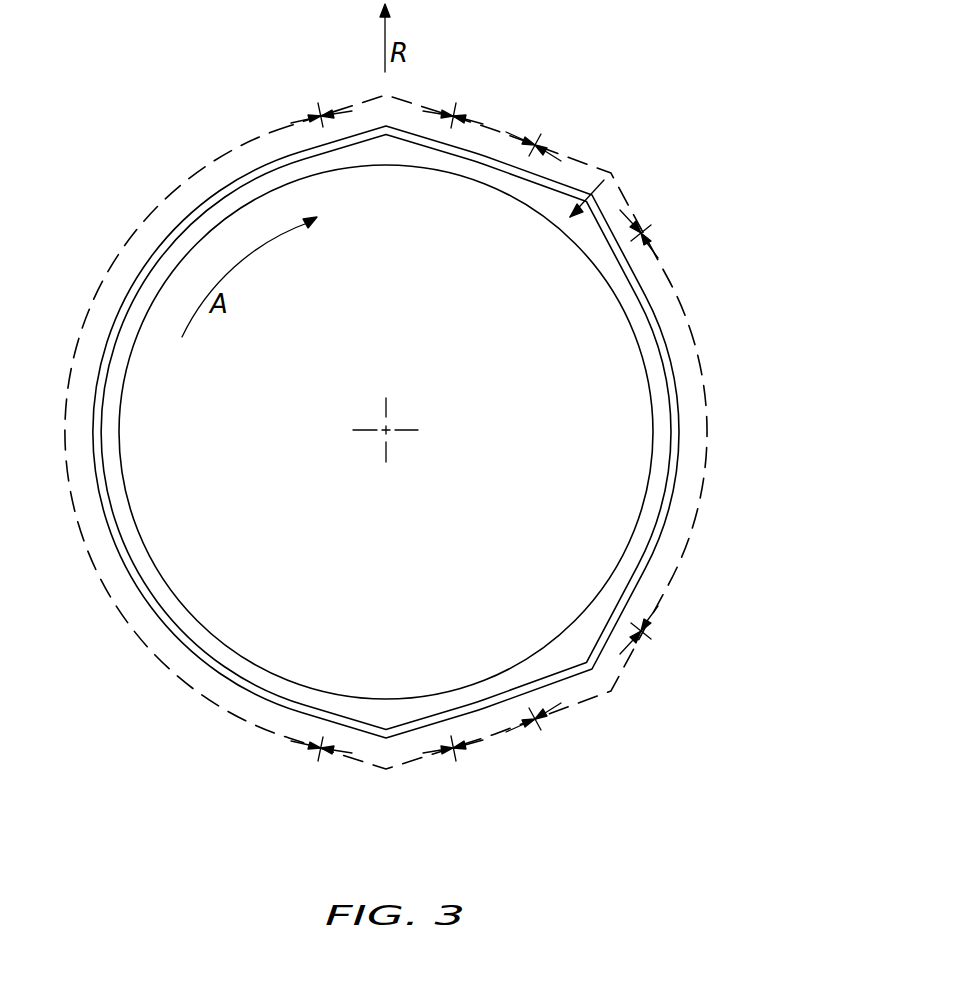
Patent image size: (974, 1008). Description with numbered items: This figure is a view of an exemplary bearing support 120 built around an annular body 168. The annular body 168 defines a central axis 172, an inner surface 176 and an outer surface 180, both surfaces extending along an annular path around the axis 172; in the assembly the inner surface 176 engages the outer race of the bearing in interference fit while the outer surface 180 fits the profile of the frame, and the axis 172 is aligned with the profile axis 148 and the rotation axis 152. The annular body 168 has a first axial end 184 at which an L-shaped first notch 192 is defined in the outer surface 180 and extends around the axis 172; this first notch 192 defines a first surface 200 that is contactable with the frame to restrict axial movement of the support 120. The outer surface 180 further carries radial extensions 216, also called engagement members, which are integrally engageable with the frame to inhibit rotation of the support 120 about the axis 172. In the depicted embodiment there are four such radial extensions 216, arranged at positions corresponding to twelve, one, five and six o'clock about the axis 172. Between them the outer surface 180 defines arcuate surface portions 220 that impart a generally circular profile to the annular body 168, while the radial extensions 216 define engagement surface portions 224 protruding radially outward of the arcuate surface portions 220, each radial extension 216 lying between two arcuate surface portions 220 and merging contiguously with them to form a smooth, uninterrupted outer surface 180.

The support 120 is at (928, 142).
The profile axis 148 is at (324, 449).
The rotation axis 152 is at (324, 449).
The axis 172 is at (384, 433).
The annular body 168 is at (660, 398).
The inner surface 176 is at (595, 246).
The outer surface 180 is at (665, 328).
The first axial end 184 is at (604, 180).
The first notch 192 is at (163, 250).
The first surface 200 is at (238, 182).
The radial extensions 216 is at (386, 125).
The arcuate surface portions 220 is at (490, 123).
The engagement surface portions 224 is at (360, 100).